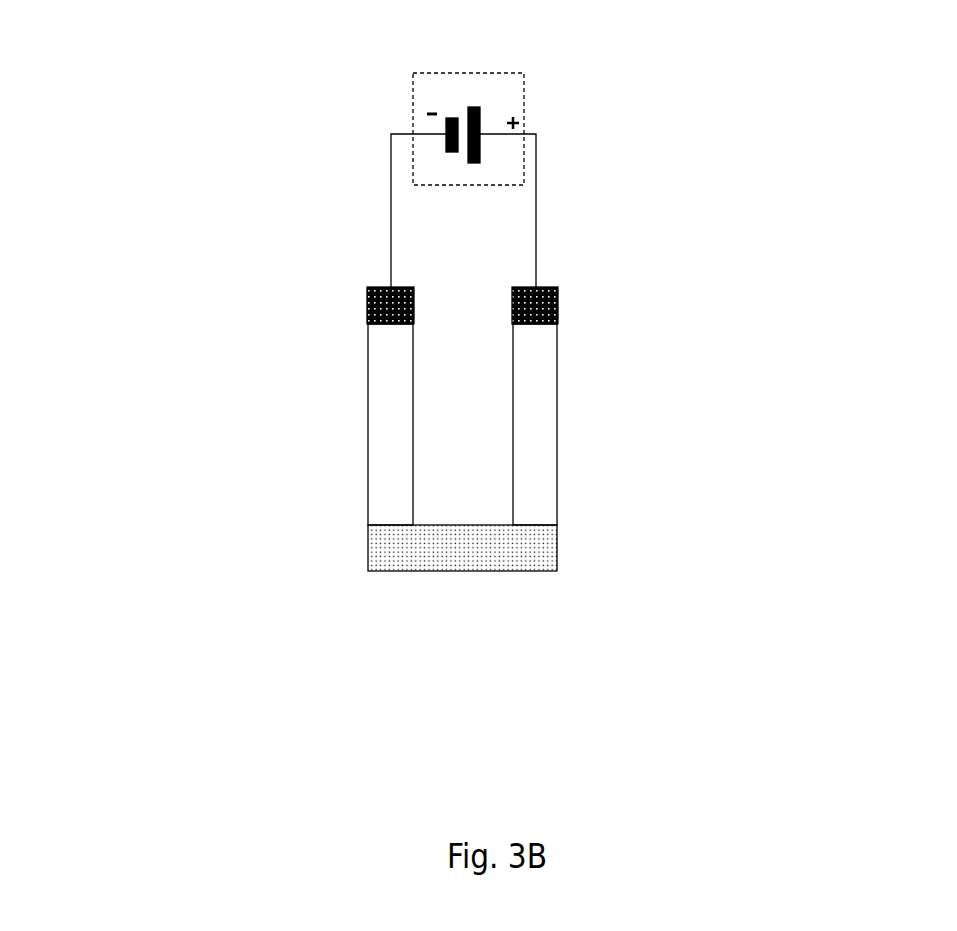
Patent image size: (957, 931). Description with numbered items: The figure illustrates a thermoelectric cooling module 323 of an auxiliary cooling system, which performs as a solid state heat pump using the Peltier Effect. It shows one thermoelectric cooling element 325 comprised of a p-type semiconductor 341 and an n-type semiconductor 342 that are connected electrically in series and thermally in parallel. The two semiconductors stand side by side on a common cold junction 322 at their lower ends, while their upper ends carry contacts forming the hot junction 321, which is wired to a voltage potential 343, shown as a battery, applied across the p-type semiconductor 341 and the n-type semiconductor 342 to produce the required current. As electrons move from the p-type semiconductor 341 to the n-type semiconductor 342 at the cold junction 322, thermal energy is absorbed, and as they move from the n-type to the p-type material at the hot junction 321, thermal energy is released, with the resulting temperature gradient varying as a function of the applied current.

The thermoelectric cooling module 323 is at (805, 152).
The voltage potential 343 is at (399, 95).
The hot junction 321 is at (512, 305).
The p-type semiconductor 341 is at (368, 425).
The n-type semiconductor 342 is at (557, 425).
The thermoelectric cooling element 325 is at (321, 513).
The cold junction 322 is at (558, 548).